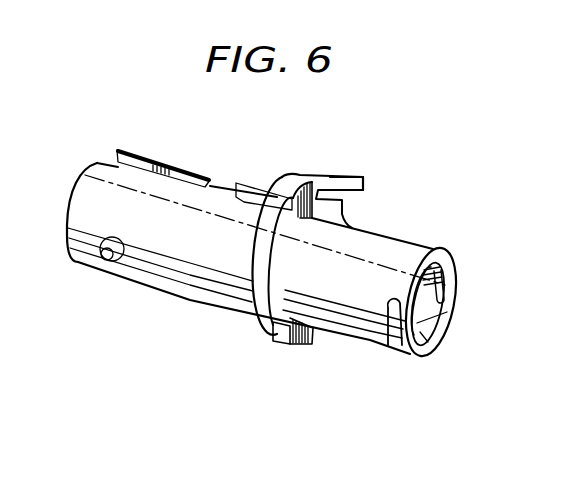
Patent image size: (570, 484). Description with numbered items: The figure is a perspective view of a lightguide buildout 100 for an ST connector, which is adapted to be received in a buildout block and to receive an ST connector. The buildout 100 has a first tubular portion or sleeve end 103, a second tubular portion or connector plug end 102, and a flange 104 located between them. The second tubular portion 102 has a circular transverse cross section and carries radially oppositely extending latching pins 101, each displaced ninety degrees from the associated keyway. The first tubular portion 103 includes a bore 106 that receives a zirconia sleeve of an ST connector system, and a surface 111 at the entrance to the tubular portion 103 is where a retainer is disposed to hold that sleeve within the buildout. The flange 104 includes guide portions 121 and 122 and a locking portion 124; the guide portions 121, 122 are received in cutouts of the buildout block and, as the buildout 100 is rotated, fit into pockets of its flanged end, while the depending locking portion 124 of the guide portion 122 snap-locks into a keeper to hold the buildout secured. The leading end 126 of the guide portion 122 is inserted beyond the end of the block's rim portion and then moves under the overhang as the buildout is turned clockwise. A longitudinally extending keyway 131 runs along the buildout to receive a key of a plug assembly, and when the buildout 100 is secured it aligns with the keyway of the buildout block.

The lightguide buildout 100 is at (292, 114).
The latching pins 101 is at (100, 263).
The second tubular portion or connector plug end 102 is at (95, 162).
The first tubular portion or sleeve end 103 is at (460, 294).
The flange 104 is at (257, 290).
The bore 106 is at (452, 282).
The surface 111 is at (423, 337).
The guide portion 121 is at (301, 346).
The guide portion 122 is at (310, 172).
The locking portion 124 is at (350, 173).
The leading end 126 is at (270, 207).
The keyway 131 is at (187, 165).